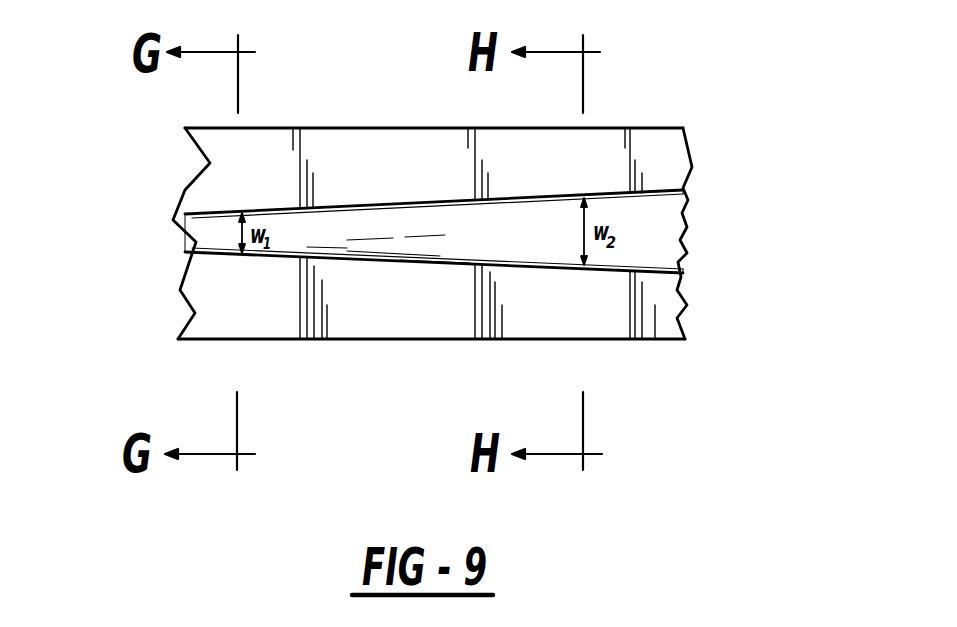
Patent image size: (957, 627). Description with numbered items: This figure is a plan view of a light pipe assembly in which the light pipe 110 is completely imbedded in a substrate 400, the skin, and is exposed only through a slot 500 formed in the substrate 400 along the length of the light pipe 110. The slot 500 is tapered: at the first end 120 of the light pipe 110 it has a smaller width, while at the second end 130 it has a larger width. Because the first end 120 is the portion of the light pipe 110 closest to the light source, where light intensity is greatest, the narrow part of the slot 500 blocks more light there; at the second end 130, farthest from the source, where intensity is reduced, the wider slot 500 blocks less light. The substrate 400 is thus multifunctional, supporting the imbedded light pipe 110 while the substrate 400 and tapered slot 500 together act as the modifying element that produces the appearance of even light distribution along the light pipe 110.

The substrate 400 is at (635, 153).
The slot 500 is at (422, 203).
The second end 130 is at (660, 218).
The light pipe 110 is at (650, 275).
The first end 120 is at (197, 228).